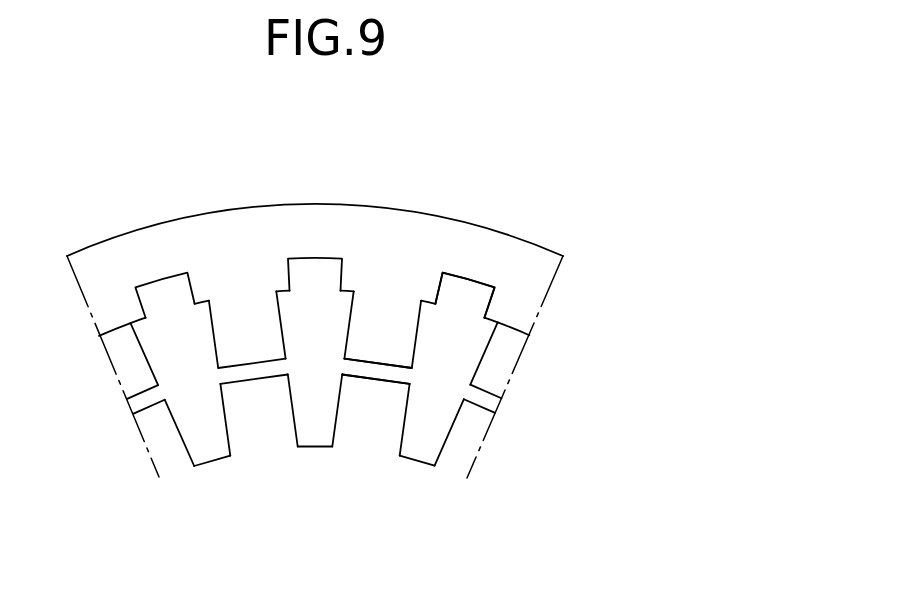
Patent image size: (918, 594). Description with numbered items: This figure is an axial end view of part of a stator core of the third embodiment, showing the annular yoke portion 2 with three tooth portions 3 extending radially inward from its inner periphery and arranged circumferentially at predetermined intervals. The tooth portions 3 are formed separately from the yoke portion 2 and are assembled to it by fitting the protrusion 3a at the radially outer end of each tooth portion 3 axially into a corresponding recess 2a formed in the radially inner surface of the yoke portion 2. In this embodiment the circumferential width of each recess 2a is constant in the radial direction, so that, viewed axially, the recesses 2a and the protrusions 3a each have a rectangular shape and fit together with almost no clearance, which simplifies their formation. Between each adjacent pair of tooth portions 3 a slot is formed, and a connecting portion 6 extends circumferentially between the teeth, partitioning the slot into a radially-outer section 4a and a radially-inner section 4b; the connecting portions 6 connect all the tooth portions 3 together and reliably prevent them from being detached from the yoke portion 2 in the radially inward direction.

The yoke portion 2 is at (388, 242).
The recess 2a is at (473, 287).
The tooth portion 3 is at (457, 350).
The protrusion 3a is at (450, 293).
The radially-outer section 4a is at (259, 346).
The radially-inner section 4b is at (265, 431).
The connecting portion 6 is at (375, 372).